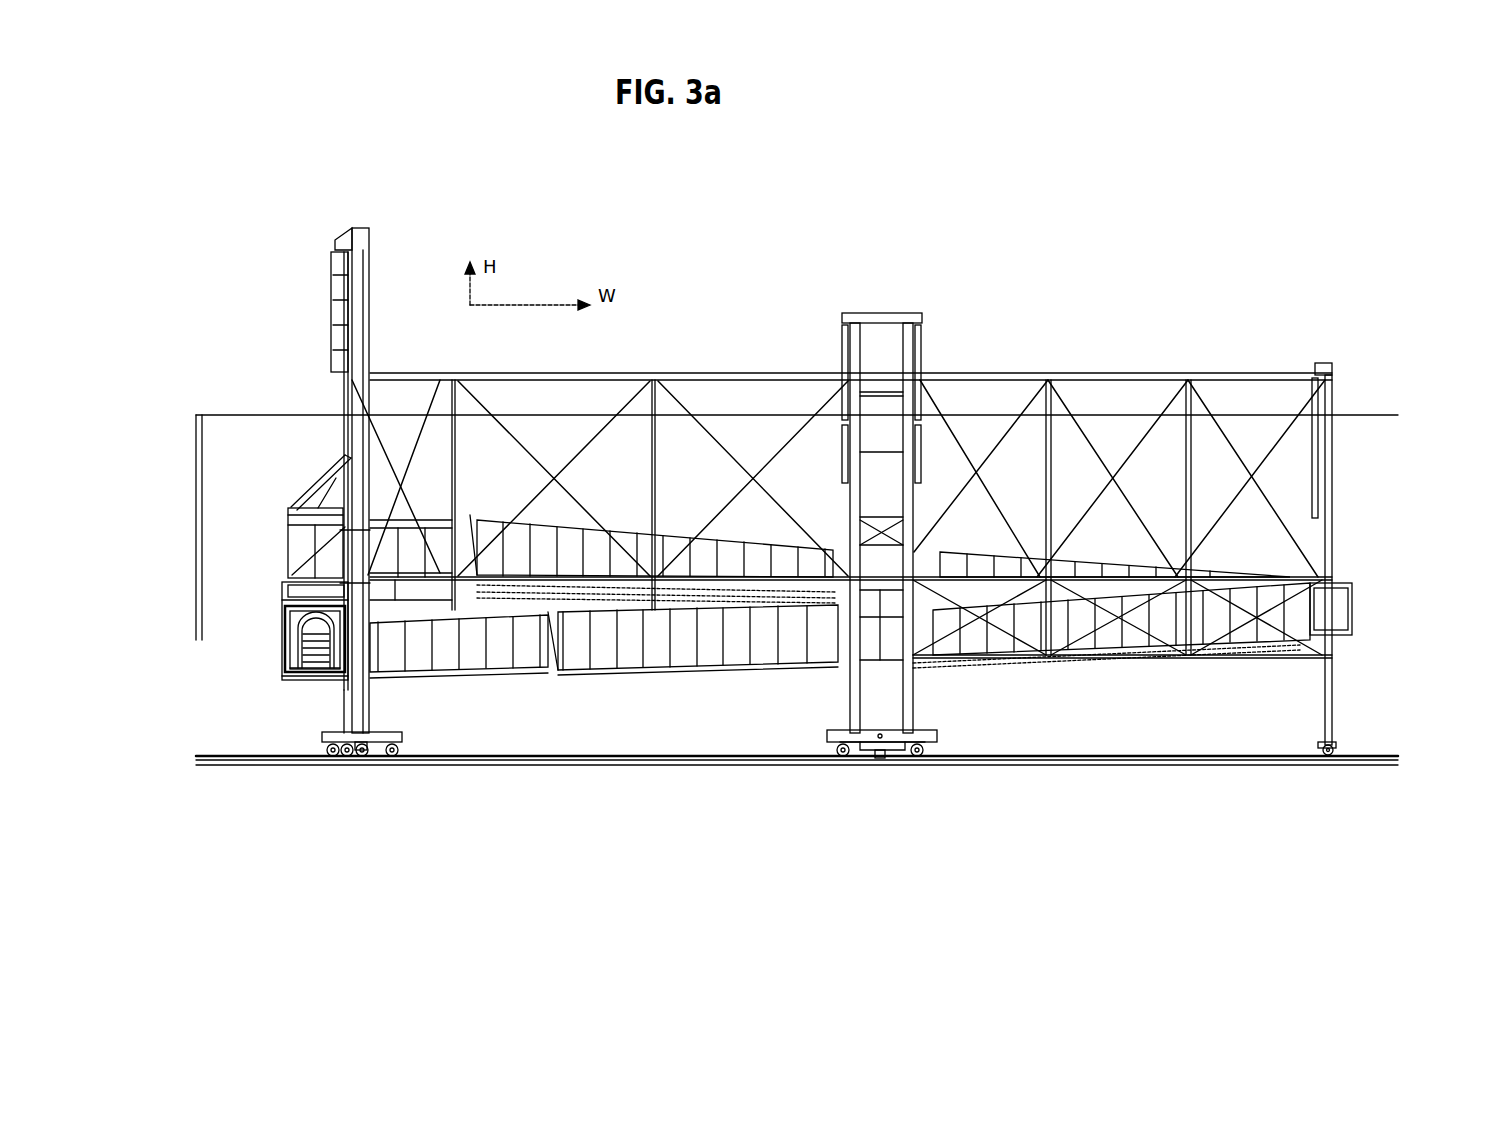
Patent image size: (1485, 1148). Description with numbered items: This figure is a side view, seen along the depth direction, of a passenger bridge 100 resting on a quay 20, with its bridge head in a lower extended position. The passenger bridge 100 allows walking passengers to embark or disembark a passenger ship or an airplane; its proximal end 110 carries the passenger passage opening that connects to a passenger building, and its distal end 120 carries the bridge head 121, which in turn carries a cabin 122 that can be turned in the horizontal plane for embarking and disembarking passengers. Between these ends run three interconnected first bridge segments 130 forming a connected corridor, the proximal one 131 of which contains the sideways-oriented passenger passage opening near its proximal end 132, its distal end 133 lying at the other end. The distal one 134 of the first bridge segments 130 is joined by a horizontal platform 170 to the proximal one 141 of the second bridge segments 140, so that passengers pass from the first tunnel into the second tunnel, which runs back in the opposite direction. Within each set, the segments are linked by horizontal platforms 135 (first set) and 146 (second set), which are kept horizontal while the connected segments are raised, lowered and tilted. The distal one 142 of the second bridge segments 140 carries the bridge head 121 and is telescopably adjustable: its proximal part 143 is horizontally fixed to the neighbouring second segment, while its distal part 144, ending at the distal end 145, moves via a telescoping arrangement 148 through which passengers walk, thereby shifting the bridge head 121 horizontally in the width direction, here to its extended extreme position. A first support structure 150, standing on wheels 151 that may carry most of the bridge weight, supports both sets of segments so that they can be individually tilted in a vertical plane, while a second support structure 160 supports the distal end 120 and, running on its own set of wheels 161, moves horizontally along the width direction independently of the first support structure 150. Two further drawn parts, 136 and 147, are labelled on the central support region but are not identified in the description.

The quay 20 is at (215, 776).
The passenger bridge 100 is at (226, 274).
The proximal end 110 is at (274, 494).
The distal end 120 is at (223, 616).
The bridge head 121 is at (283, 604).
The cabin 122 is at (283, 637).
The first bridge segment 130 is at (445, 510).
The proximal first bridge segment 131 is at (352, 482).
The proximal end of proximal first segment 132 is at (438, 524).
The distal end of proximal first segment 133 is at (430, 555).
The distal first bridge segment 134 is at (1110, 563).
The horizontal platform (first set) 135 is at (927, 560).
The central mast 136 is at (890, 490).
The second bridge segment 140 is at (1111, 736).
The proximal second bridge segment 141 is at (1195, 662).
The distal second bridge segment 142 is at (728, 669).
The proximal part 143 is at (840, 743).
The distal part 144 is at (421, 836).
The distal end of distal second segment 145 is at (372, 745).
The horizontal platform (second set) 146 is at (880, 752).
The carriage wheel 147 is at (860, 752).
The telescoping arrangement 148 is at (490, 674).
The first support structure 150 is at (985, 372).
The wheels of first support structure 151 is at (926, 754).
The second support structure 160 is at (372, 292).
The set of wheels 161 is at (386, 756).
The horizontal platform 170 is at (1353, 614).